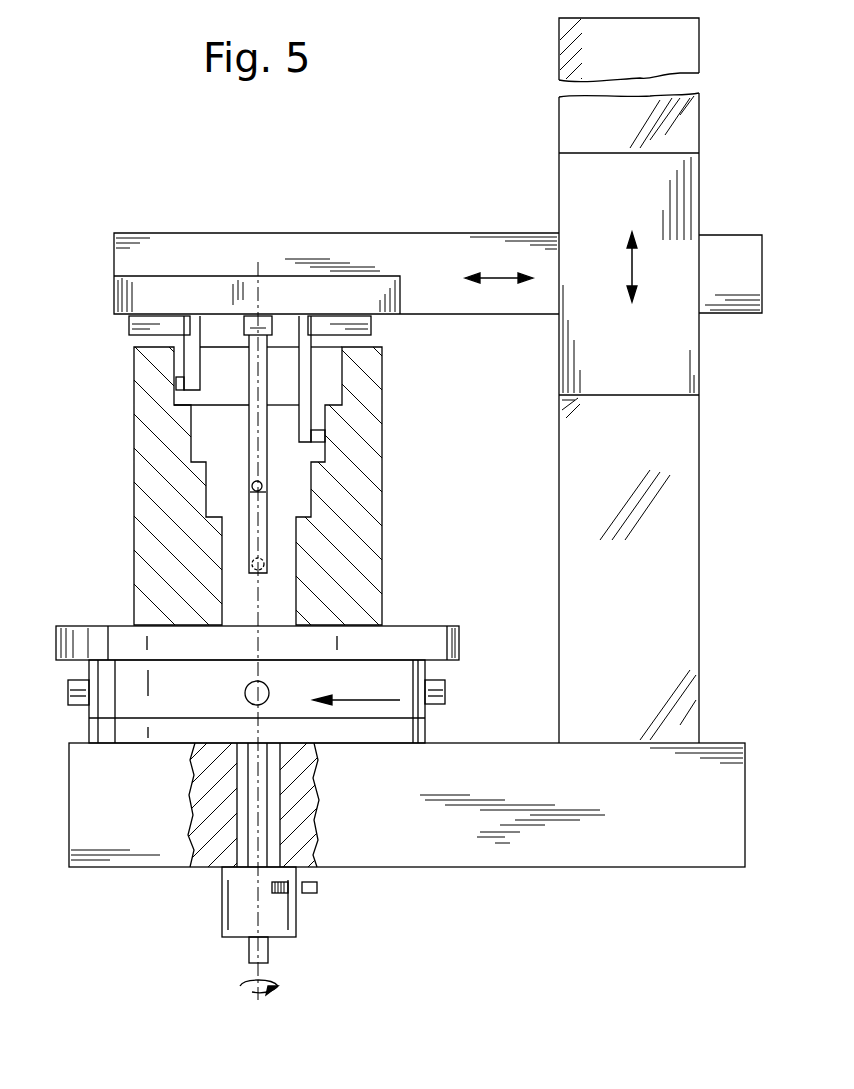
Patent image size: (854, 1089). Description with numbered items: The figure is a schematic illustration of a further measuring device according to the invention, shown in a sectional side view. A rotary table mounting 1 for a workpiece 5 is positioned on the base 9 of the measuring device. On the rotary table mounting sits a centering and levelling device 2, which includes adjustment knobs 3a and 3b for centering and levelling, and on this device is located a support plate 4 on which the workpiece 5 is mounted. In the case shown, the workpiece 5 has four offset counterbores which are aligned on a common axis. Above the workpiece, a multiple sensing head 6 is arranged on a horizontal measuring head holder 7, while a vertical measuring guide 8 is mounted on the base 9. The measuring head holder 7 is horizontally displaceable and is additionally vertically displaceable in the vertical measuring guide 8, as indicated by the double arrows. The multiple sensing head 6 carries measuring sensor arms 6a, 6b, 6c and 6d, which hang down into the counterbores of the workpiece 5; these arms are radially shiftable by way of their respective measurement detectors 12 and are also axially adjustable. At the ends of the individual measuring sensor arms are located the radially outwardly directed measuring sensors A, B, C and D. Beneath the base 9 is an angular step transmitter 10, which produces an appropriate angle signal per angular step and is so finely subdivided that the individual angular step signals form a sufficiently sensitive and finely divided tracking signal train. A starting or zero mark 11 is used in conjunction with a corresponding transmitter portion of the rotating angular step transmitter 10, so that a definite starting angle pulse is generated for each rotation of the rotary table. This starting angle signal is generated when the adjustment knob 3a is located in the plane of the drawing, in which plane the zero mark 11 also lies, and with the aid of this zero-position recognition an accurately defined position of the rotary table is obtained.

The rotary table mounting 1 is at (90, 733).
The centering and levelling device 2 is at (183, 698).
The adjustment knob 3a is at (447, 690).
The adjustment knob 3b is at (268, 690).
The support plate 4 is at (89, 634).
The workpiece 5 is at (137, 497).
The multiple sensing head 6 is at (200, 286).
The measuring sensor arm 6a is at (312, 372).
The measuring sensor arm 6b is at (262, 546).
The measuring sensor arm 6c is at (186, 376).
The measuring sensor arm 6d is at (249, 424).
The horizontal measuring head holder 7 is at (385, 238).
The vertical measuring guide 8 is at (560, 368).
The base 9 is at (424, 862).
The angular step transmitter 10 is at (272, 896).
The starting or zero mark 11 is at (318, 894).
The measurement detector 12 is at (130, 330).
The measuring sensor A is at (318, 438).
The measuring sensor B is at (256, 574).
The measuring sensor C is at (177, 384).
The measuring sensor D is at (263, 487).